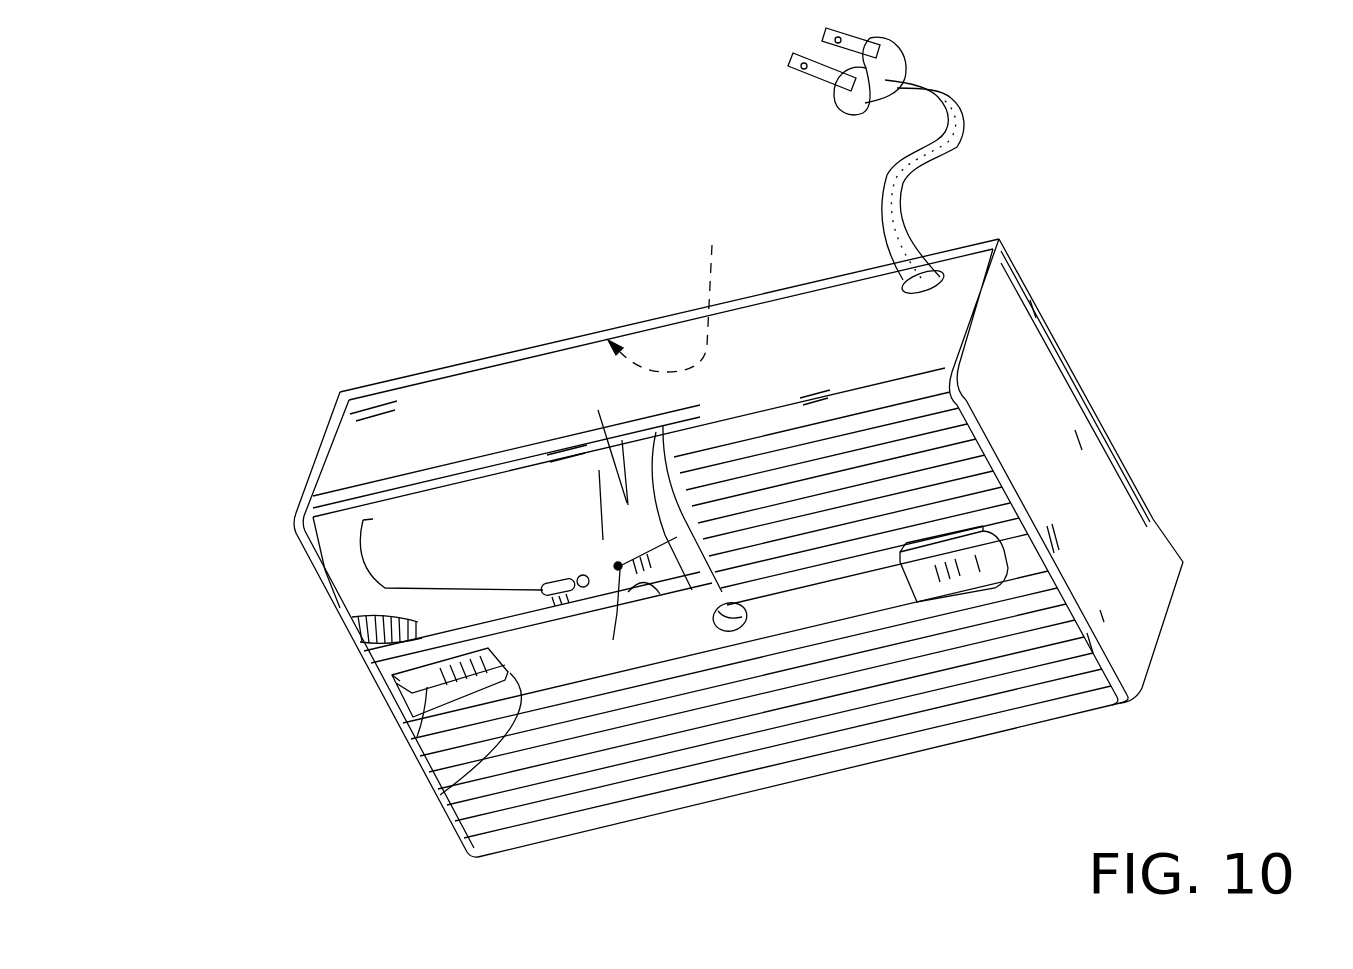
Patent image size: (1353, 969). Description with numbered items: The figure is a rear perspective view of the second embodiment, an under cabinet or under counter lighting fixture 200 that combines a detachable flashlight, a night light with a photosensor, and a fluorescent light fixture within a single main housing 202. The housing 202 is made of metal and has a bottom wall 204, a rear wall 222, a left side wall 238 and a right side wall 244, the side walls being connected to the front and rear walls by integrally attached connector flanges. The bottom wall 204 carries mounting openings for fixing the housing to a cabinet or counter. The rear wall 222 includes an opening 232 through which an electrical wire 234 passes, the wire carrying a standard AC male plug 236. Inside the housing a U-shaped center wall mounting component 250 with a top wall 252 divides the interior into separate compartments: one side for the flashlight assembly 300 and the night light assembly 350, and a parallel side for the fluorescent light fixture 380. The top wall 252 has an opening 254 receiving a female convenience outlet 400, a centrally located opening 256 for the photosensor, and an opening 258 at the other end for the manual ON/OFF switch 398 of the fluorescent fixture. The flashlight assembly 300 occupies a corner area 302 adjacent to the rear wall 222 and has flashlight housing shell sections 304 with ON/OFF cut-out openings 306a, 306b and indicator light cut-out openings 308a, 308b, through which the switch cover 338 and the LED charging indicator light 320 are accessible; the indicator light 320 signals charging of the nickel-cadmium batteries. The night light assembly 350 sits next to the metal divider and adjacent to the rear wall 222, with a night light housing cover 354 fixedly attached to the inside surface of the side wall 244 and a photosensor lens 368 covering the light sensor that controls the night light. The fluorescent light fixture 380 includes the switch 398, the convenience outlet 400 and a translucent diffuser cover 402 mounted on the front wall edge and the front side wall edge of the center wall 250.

The under cabinet lighting fixture 200 is at (291, 716).
The main housing 202 is at (495, 335).
The bottom wall 204 is at (712, 245).
The rear wall 222 is at (437, 390).
The opening 232 is at (910, 255).
The electrical wire 234 is at (897, 208).
The AC male plug 236 is at (880, 70).
The left side wall 238 is at (320, 438).
The right side wall 244 is at (1133, 576).
The center wall mounting component 250 is at (796, 617).
The top wall 252 is at (867, 590).
The opening 254 is at (997, 590).
The opening 256 is at (707, 613).
The opening 258 is at (445, 790).
The flashlight assembly 300 is at (460, 515).
The corner area 302 is at (598, 410).
The flashlight housing shell sections 304 is at (657, 430).
The ON/OFF cut-out opening 306a is at (574, 582).
The ON/OFF cut-out opening 306b is at (583, 575).
The indicator light cut-out opening 308a is at (599, 470).
The indicator light cut-out opening 308b is at (613, 640).
The LED charging indicator light 320 is at (616, 561).
The switch cover 338 is at (540, 592).
The night light assembly 350 is at (785, 447).
The night light housing cover 354 is at (950, 412).
The photosensor lens 368 is at (730, 612).
The fluorescent light fixture 380 is at (617, 810).
The manual ON/OFF switch 398 is at (413, 717).
The female convenience outlet 400 is at (975, 560).
The translucent diffuser cover 402 is at (1025, 707).